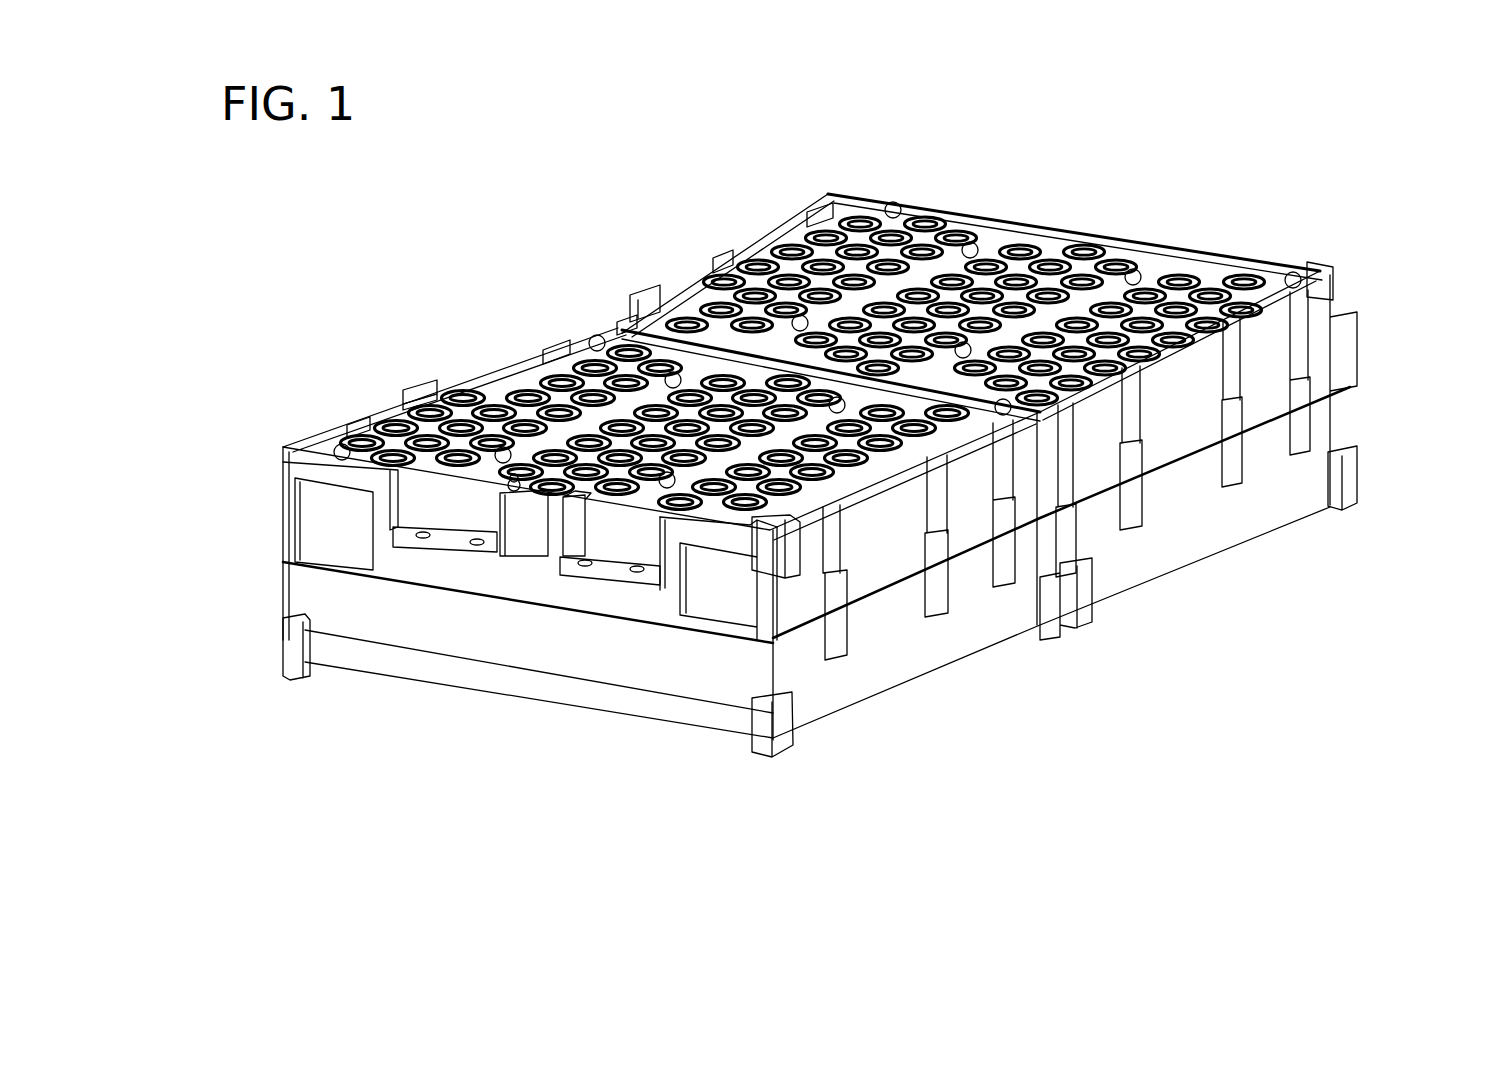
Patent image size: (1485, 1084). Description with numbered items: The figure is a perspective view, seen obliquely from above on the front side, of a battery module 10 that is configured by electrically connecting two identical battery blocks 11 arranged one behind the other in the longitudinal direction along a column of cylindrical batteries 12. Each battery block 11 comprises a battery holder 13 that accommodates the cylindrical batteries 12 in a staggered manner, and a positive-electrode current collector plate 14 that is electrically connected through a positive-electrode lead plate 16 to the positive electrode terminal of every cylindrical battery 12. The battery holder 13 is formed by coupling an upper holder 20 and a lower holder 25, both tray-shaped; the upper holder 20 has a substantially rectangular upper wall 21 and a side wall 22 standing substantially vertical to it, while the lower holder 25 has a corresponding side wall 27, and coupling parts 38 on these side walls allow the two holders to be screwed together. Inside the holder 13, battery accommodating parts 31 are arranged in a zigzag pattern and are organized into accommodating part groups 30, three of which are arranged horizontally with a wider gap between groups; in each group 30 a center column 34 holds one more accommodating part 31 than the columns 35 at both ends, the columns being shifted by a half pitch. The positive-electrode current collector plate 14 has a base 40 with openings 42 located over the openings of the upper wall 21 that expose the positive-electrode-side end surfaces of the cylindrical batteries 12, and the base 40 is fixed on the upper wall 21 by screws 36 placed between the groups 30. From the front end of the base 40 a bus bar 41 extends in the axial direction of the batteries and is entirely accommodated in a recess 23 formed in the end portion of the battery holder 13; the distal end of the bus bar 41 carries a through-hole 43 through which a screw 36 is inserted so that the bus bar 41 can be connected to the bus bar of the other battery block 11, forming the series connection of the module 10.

The battery module 10 is at (1330, 107).
The battery block 11 is at (1006, 641).
The cylindrical battery 12 is at (1185, 275).
The battery holder 13 is at (208, 490).
The positive-electrode current collector plate 14 is at (790, 262).
The positive-electrode lead plate 16 is at (803, 240).
The upper holder 20 is at (307, 516).
The upper wall 21 is at (405, 395).
The side wall 22 is at (310, 497).
The recess 23 is at (408, 505).
The lower holder 25 is at (307, 592).
The side wall 27 is at (305, 640).
The accommodating part group 30 is at (1005, 130).
The battery accommodating part 31 is at (1024, 245).
The center column 34 is at (926, 216).
The column at both ends 35 is at (864, 216).
The screw 36 is at (633, 292).
The coupling part 38 is at (933, 590).
The base 40 is at (717, 502).
The bus bar 41 is at (460, 512).
The opening 42 is at (780, 490).
The through-hole 43 is at (637, 572).